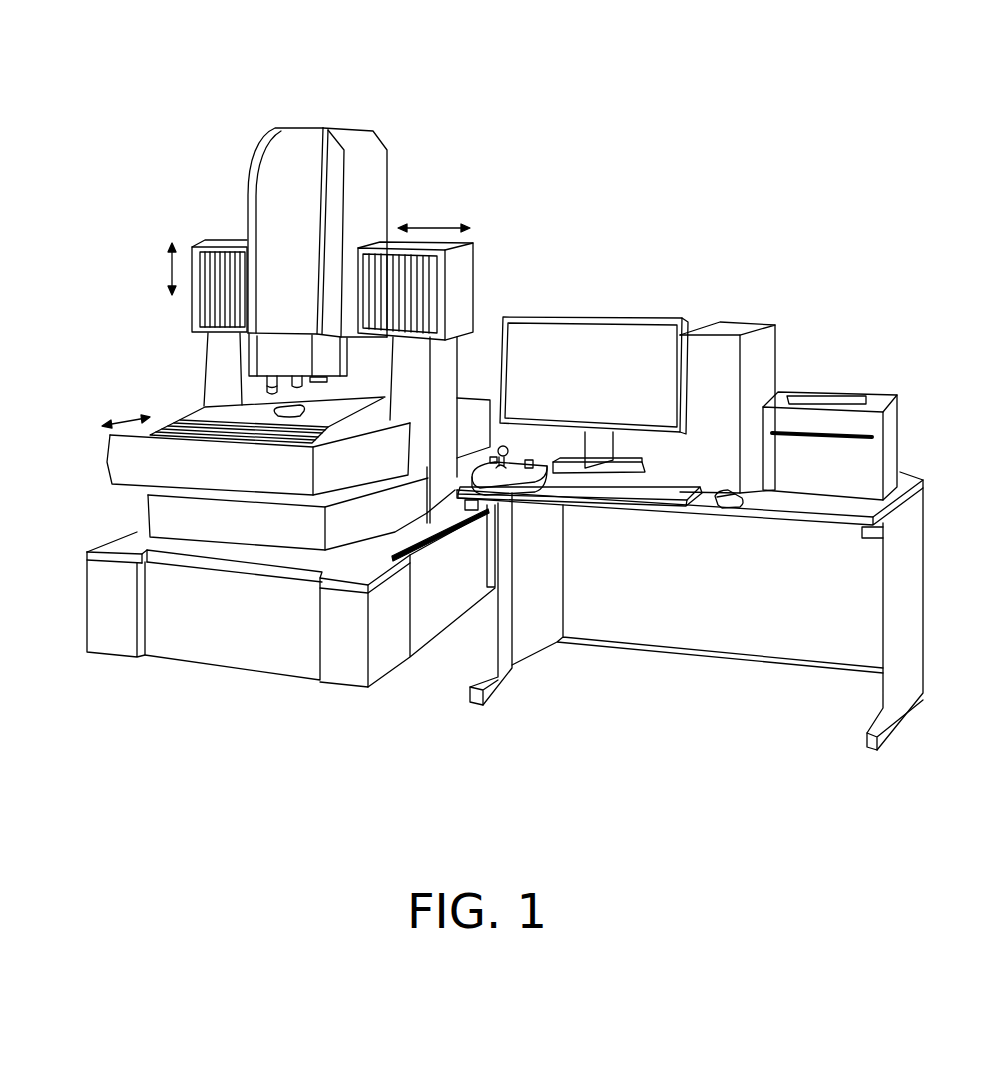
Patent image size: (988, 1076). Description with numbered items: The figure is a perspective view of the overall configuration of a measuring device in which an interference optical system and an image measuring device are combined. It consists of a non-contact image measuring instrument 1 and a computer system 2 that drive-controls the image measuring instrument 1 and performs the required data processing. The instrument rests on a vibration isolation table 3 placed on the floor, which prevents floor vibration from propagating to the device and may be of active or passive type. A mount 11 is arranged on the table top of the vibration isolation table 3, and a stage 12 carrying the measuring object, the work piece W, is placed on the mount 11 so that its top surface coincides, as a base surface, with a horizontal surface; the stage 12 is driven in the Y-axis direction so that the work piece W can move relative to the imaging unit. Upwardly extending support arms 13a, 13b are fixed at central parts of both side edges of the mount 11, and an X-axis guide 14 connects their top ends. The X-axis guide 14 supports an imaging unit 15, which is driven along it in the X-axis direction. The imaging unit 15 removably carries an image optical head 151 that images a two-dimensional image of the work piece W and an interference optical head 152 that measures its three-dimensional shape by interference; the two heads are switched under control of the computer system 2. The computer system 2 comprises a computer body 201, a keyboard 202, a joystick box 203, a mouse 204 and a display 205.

The image measuring instrument 1 is at (401, 90).
The computer system 2 is at (725, 281).
The vibration isolation table 3 is at (272, 637).
The mount 11 is at (123, 447).
The stage 12 is at (333, 413).
The support arm 13a is at (450, 370).
The support arm 13b is at (211, 395).
The X-axis guide 14 is at (220, 240).
The imaging unit 15 is at (252, 170).
The image optical head 151 is at (291, 378).
The interference optical head 152 is at (266, 386).
The computer body 201 is at (747, 322).
The keyboard 202 is at (637, 507).
The joystick box 203 is at (528, 493).
The mouse 204 is at (717, 510).
The display 205 is at (593, 316).
The work piece W is at (271, 410).